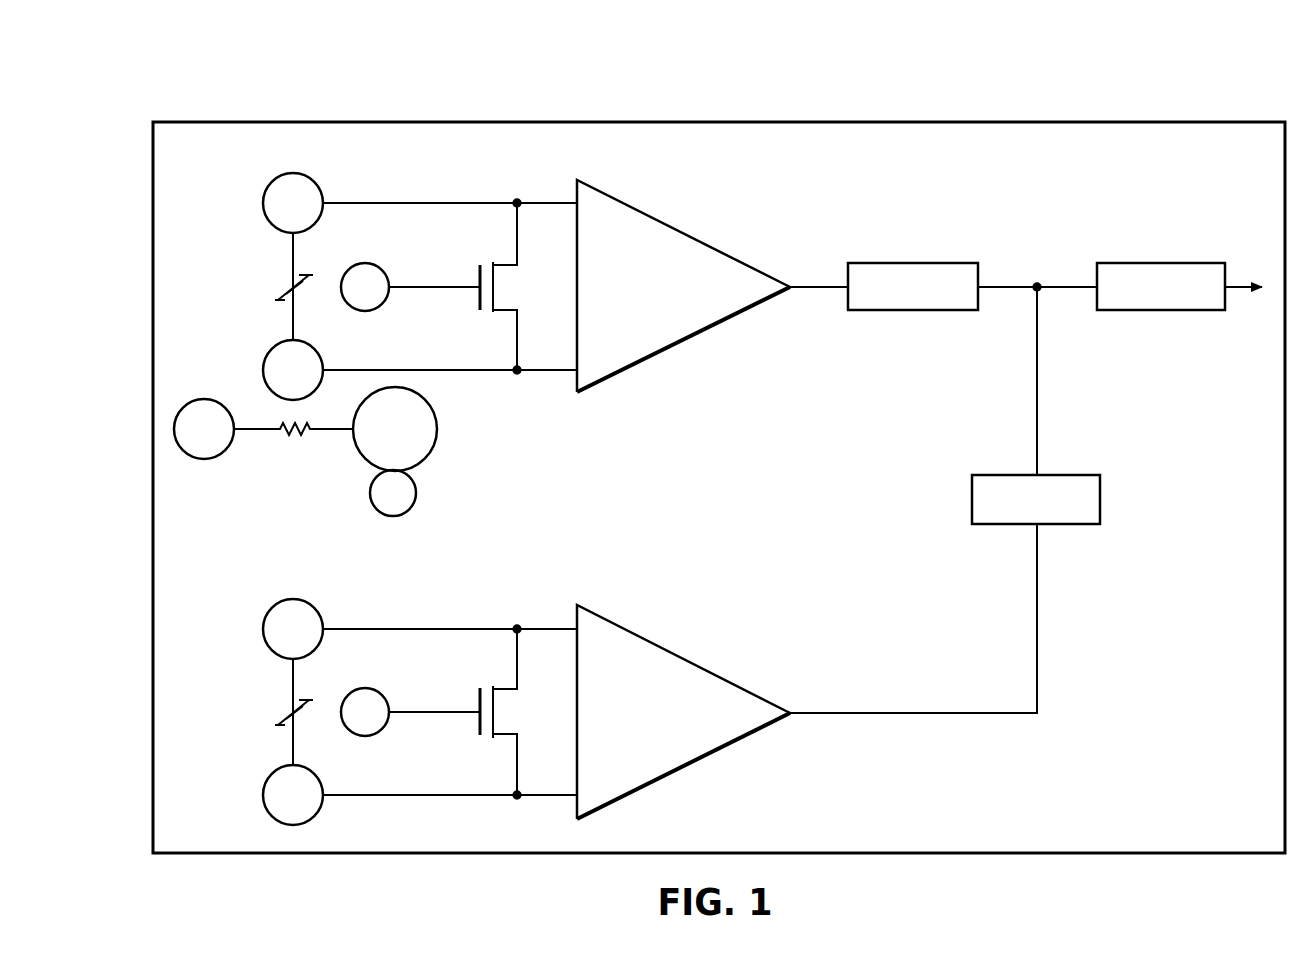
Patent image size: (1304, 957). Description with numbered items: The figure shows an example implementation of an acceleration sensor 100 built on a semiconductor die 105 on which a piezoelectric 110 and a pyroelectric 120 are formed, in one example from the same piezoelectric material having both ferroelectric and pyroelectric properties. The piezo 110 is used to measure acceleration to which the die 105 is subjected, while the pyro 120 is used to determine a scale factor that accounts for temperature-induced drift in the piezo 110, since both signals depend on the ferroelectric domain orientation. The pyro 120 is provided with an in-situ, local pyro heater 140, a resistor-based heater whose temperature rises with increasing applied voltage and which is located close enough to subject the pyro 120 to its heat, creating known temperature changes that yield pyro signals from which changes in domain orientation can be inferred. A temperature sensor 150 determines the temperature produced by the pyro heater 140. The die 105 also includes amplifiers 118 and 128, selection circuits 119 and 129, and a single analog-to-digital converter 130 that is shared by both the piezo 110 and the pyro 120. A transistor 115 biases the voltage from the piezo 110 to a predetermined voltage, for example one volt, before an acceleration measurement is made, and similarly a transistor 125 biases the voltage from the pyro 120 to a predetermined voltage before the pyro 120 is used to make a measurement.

The acceleration sensor 100 is at (515, 72).
The semiconductor die 105 is at (1032, 120).
The piezoelectric 110 is at (282, 710).
The transistor 115 is at (480, 699).
The amplifier 118 is at (684, 768).
The selection circuit 119 is at (1103, 498).
The pyroelectric 120 is at (280, 288).
The transistor 125 is at (480, 274).
The amplifier 128 is at (683, 232).
The selection circuit 129 is at (915, 262).
The analog-to-digital converter 130 is at (1160, 262).
The pyro heater 140 is at (293, 437).
The temperature sensor 150 is at (417, 496).